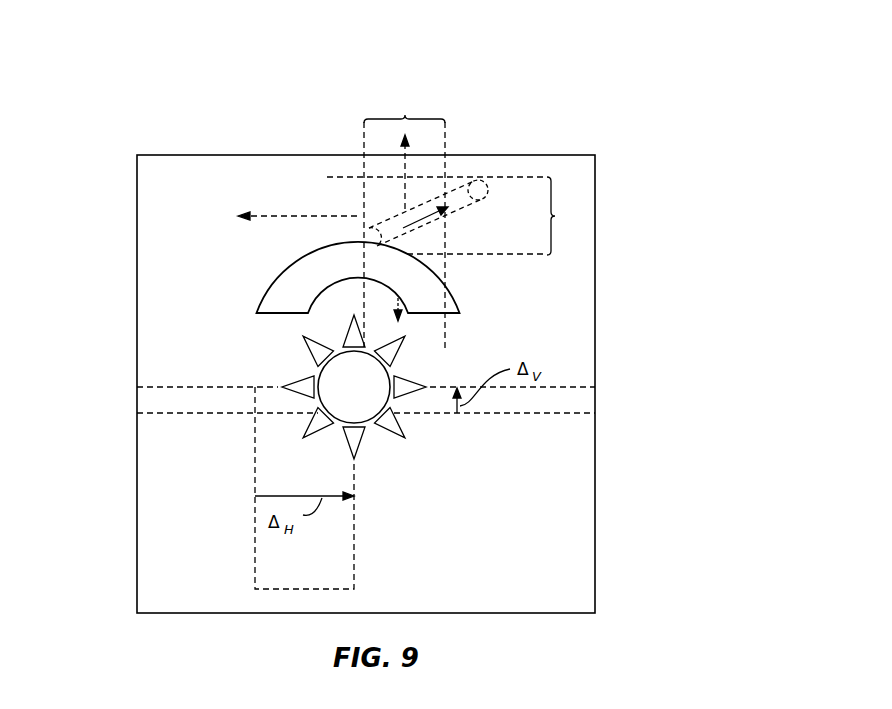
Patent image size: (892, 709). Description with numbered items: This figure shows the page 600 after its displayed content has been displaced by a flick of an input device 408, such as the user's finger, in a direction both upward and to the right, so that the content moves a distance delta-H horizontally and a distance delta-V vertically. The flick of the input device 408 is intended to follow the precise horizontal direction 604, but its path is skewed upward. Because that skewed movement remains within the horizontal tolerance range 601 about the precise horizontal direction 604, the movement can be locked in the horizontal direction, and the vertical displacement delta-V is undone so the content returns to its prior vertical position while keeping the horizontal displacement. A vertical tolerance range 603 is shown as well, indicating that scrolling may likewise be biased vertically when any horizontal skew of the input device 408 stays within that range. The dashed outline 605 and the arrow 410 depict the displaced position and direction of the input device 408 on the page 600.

The page 600 is at (132, 143).
The horizontal tolerance range 601 is at (555, 216).
The vertical tolerance range 603 is at (404, 204).
The precise horizontal direction 604 is at (308, 215).
The probe / transducer position outline 605 is at (402, 168).
The input device 408 is at (481, 187).
The transducer axis direction arrow 410 is at (425, 222).